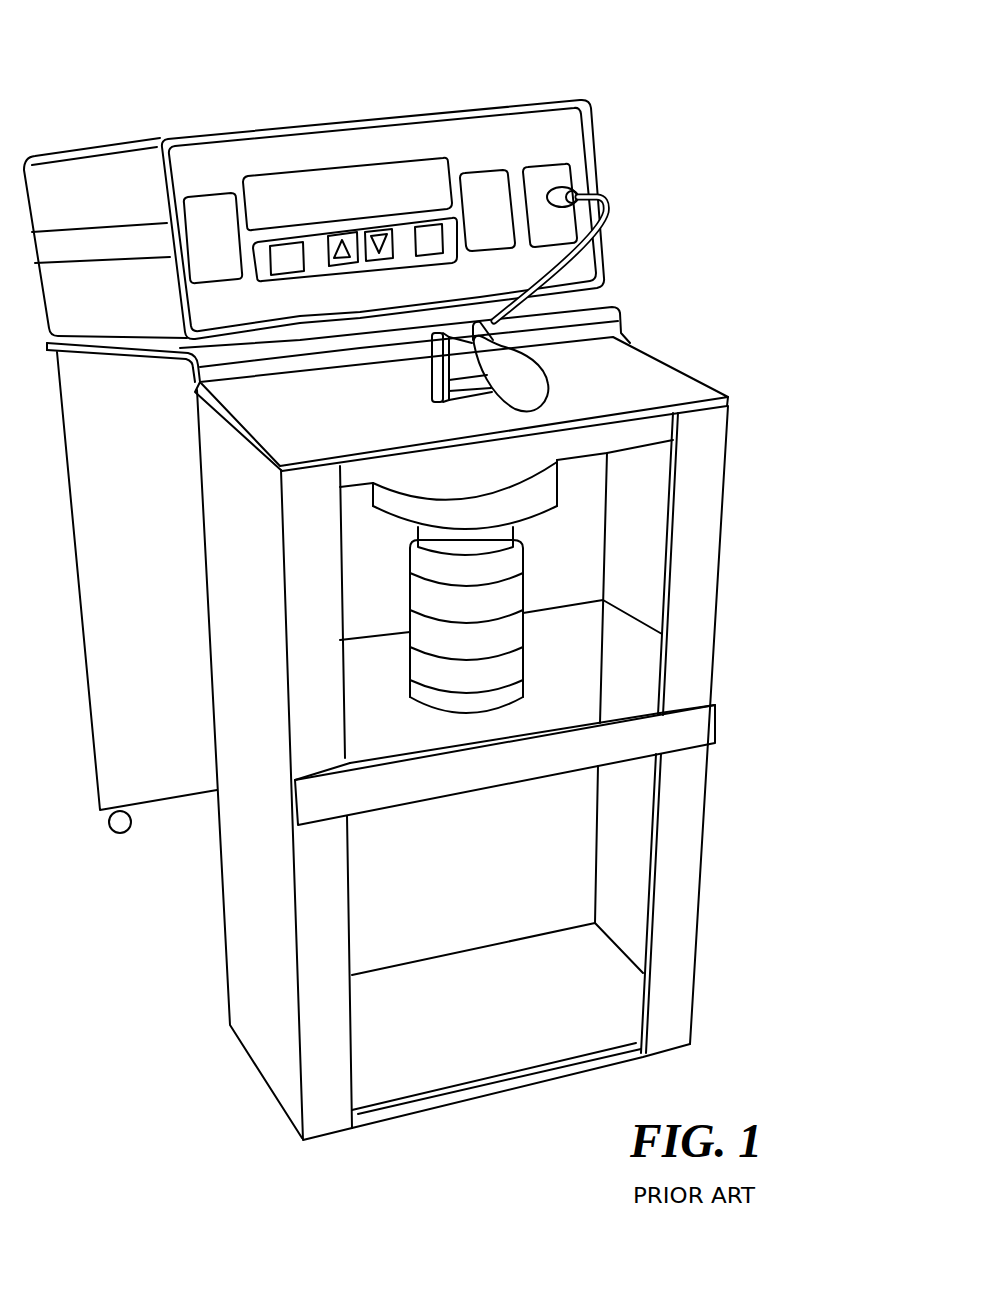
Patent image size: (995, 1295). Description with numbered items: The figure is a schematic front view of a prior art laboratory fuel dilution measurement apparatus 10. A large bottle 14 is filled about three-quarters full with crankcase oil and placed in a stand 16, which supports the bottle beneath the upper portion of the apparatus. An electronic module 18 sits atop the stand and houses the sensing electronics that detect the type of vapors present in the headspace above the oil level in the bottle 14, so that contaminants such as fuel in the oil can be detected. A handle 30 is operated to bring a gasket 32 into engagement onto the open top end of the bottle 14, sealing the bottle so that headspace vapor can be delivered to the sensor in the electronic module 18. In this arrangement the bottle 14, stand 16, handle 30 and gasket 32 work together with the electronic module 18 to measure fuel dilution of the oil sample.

The laboratory fuel dilution measurement apparatus 10 is at (603, 74).
The large bottle 14 is at (490, 638).
The stand 16 is at (323, 905).
The electronic module 18 is at (318, 150).
The handle 30 is at (527, 378).
The gasket 32 is at (540, 494).